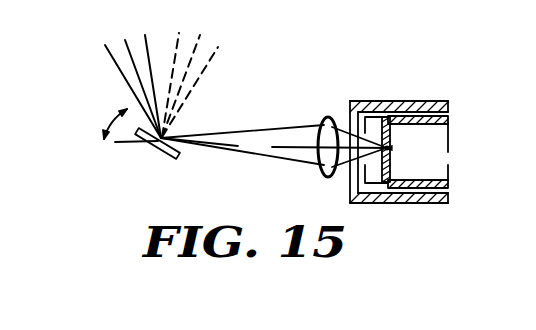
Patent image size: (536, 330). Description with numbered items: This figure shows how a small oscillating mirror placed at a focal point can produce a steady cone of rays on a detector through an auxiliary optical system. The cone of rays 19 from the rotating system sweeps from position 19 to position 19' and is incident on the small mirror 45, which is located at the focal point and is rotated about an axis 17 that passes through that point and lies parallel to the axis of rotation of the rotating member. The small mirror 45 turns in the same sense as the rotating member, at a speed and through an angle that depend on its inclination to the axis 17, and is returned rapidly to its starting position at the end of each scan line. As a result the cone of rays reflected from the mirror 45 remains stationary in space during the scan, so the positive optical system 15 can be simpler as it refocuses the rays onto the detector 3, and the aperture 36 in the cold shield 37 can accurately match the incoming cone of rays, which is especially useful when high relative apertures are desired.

The rays 19 is at (133, 71).
The rays in rotated position 19' is at (200, 73).
The axis 17 is at (161, 138).
The small mirror 45 is at (155, 151).
The positive optical system 15 is at (325, 122).
The aperture 36 is at (371, 132).
The detector 3 is at (391, 148).
The cold shield 37 is at (374, 184).